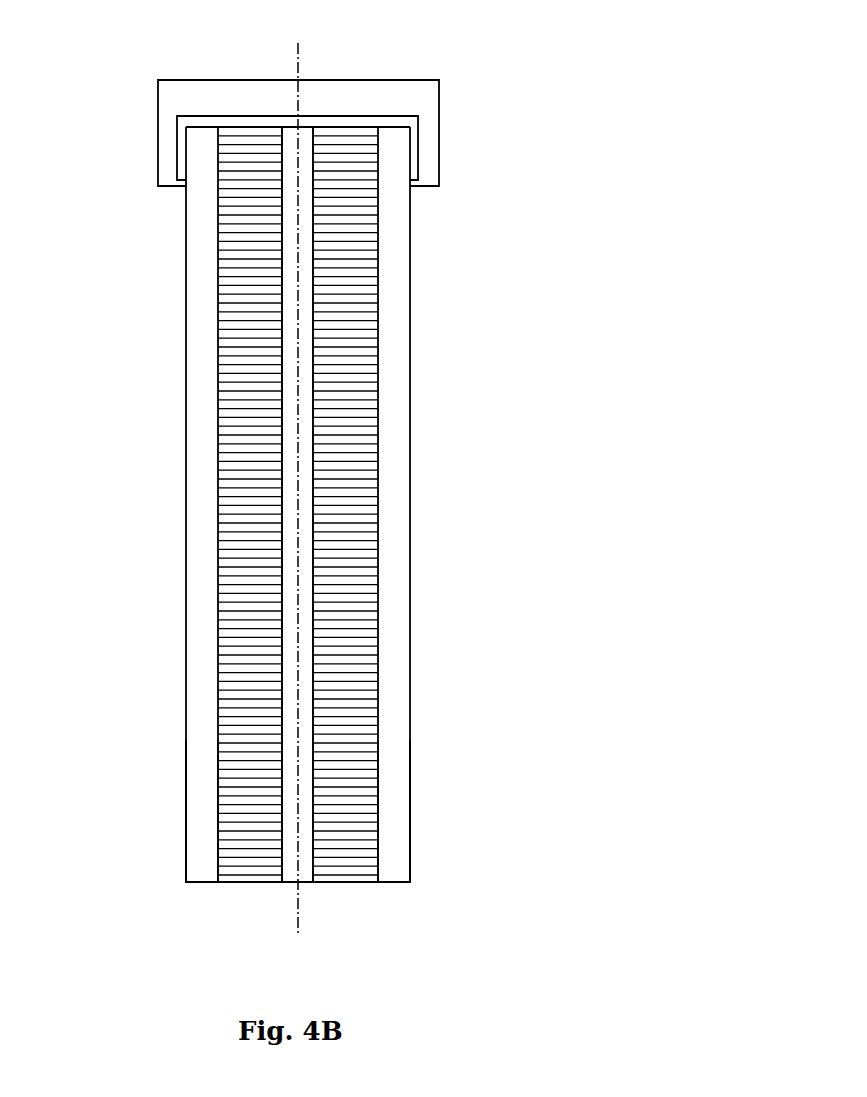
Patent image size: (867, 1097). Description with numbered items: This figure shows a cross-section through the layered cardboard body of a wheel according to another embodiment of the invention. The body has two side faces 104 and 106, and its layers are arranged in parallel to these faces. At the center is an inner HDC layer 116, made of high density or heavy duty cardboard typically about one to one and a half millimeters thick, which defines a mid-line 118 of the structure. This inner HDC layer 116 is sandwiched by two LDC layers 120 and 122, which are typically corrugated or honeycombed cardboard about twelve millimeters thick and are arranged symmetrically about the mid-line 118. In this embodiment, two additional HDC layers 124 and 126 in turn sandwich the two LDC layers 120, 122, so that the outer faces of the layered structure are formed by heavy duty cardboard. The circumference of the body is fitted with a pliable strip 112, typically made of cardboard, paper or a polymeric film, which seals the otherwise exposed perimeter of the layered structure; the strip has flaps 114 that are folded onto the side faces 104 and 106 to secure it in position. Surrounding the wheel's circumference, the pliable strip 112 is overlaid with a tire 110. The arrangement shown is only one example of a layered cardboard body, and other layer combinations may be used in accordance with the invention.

The side face 104 is at (411, 560).
The side face 106 is at (183, 556).
The tire 110 is at (422, 92).
The pliable strip 112 is at (210, 123).
The flaps 114 is at (180, 155).
The inner HDC layer 116 is at (290, 375).
The mid-line 118 is at (299, 930).
The LDC layer 120 is at (365, 305).
The LDC layer 122 is at (235, 297).
The additional HDC layer 124 is at (390, 756).
The additional HDC layer 126 is at (205, 755).